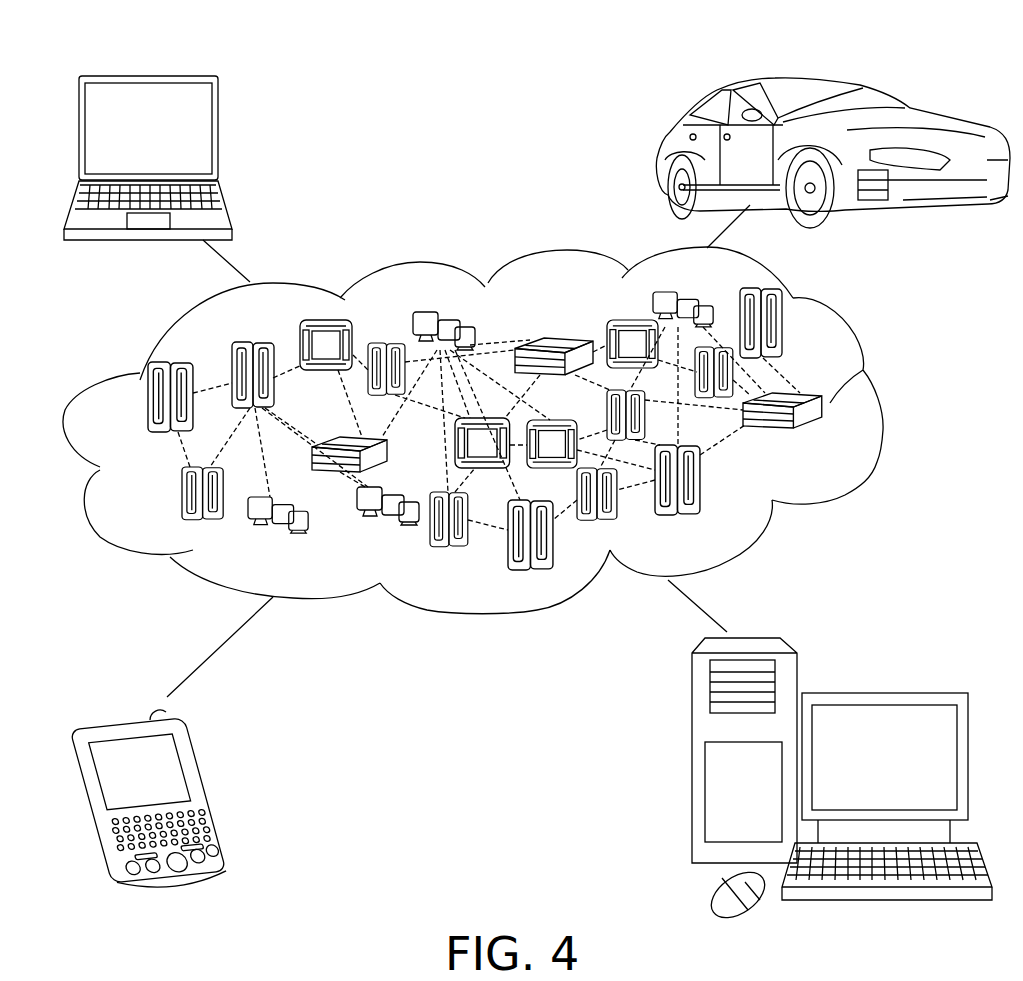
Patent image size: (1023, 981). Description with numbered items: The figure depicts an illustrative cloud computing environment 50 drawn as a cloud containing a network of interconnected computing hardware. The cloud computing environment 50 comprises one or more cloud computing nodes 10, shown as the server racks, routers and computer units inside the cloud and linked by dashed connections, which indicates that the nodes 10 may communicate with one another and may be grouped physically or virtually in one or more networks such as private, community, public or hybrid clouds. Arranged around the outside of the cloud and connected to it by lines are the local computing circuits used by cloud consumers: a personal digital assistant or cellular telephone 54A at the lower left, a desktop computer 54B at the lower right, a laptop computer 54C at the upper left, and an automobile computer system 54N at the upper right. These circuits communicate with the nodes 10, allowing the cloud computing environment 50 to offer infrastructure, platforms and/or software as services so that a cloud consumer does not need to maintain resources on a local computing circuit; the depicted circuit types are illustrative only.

The cloud computing node 10 is at (828, 439).
The cloud computing environment 50 is at (885, 408).
The personal digital assistant or cellular telephone 54A is at (207, 790).
The desktop computer 54B is at (880, 693).
The laptop computer 54C is at (220, 138).
The automobile computer system 54N is at (660, 155).